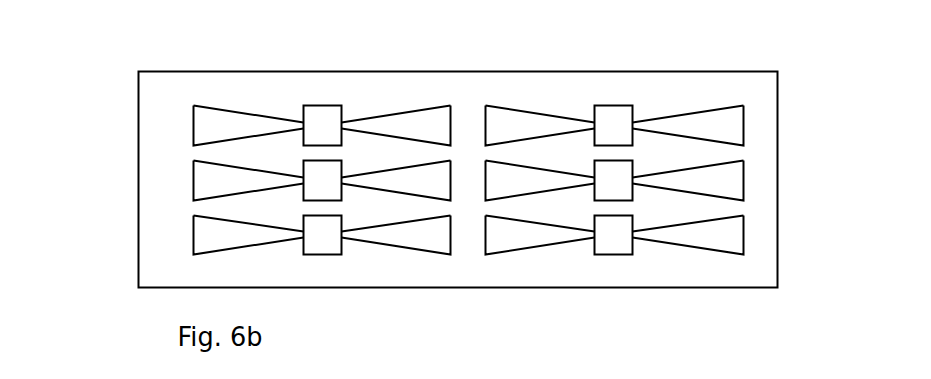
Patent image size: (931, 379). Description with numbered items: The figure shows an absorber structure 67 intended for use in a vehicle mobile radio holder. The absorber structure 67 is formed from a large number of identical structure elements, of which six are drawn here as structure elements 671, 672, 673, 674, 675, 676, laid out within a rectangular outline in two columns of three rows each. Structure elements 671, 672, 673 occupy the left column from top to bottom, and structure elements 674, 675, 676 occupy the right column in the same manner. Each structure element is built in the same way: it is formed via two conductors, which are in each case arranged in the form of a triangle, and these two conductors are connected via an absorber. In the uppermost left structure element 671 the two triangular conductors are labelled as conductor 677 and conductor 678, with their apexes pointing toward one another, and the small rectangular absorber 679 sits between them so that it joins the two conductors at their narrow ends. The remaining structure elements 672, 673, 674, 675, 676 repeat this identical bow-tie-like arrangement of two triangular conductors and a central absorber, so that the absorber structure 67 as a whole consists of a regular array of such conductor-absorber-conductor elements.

The absorber structure 67 is at (766, 160).
The structure element 671 is at (256, 85).
The structure element 672 is at (182, 187).
The structure element 673 is at (183, 244).
The structure element 674 is at (757, 117).
The structure element 675 is at (750, 180).
The structure element 676 is at (750, 234).
The conductor 677 is at (254, 117).
The conductor 678 is at (415, 118).
The absorber 679 is at (327, 106).